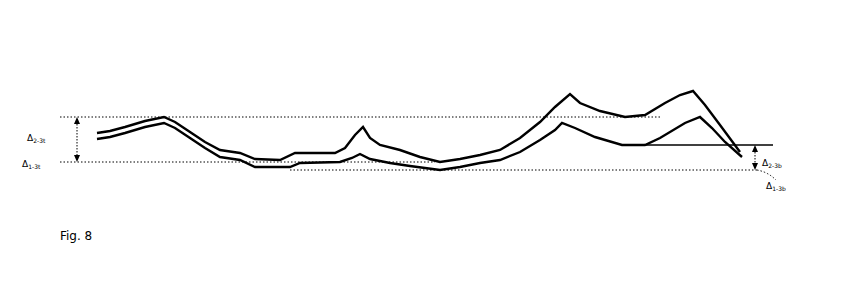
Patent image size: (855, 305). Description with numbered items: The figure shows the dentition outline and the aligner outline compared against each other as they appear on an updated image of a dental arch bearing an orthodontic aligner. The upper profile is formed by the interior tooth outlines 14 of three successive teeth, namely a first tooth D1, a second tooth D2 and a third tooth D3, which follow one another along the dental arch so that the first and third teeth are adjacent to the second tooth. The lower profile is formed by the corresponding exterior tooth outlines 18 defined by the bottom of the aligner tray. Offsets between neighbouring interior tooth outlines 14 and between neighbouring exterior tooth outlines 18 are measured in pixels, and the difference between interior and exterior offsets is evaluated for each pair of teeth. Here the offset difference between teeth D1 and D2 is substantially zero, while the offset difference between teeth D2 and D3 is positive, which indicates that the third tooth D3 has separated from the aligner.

The interior tooth outline 14 is at (353, 78).
The exterior tooth outline 18 is at (353, 195).
The first tooth D1 is at (207, 143).
The second tooth D2 is at (513, 108).
The third tooth D3 is at (667, 97).